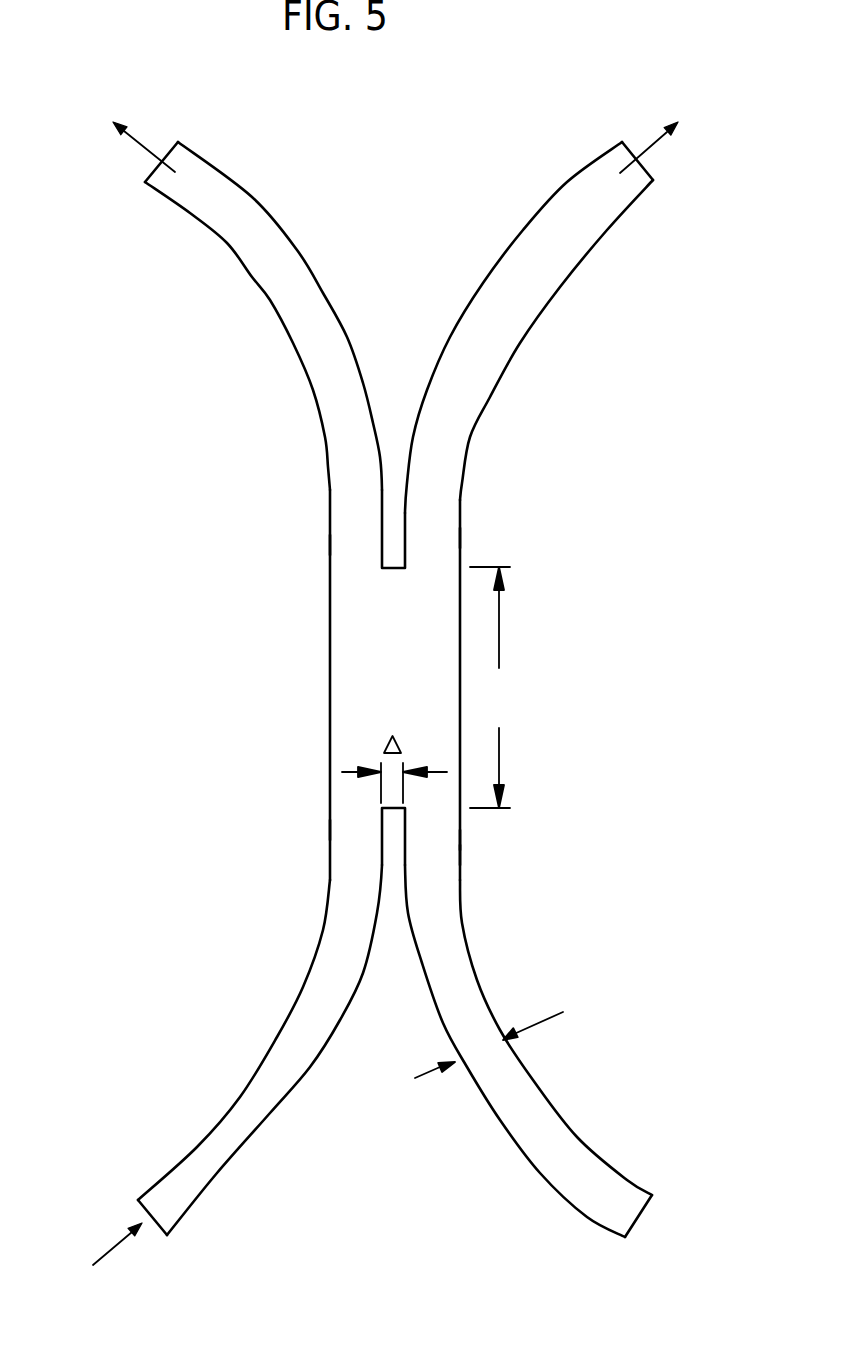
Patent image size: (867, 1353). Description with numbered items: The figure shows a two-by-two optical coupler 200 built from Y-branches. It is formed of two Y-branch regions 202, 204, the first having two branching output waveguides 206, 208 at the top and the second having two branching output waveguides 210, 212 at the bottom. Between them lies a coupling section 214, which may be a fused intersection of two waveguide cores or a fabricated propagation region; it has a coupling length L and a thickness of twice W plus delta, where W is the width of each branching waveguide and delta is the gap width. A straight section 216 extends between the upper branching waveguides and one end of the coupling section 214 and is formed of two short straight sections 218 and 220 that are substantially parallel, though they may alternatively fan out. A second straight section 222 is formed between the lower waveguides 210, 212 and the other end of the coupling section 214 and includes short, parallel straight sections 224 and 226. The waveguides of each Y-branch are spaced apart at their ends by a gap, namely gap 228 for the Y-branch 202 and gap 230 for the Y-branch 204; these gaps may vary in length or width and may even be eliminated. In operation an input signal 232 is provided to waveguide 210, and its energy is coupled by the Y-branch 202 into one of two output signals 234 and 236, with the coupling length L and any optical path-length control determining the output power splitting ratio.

The 2×2 coupler 200 is at (106, 355).
The Y-branch region 202 is at (305, 492).
The Y-branch region 204 is at (312, 878).
The branching output waveguide 206 is at (252, 200).
The branching output waveguide 208 is at (500, 258).
The branching output waveguide 210 is at (223, 1188).
The branching output waveguide 212 is at (545, 1182).
The coupling section 214 is at (330, 673).
The straight section 216 is at (522, 536).
The short straight section 218 is at (330, 545).
The short straight section 220 is at (462, 538).
The second straight section 222 is at (482, 838).
The short straight section 224 is at (330, 830).
The short straight section 226 is at (462, 855).
The gap 228 is at (393, 557).
The gap 230 is at (388, 822).
The input signal 232 is at (110, 1252).
The output signal 234 is at (117, 132).
The output signal 236 is at (682, 134).